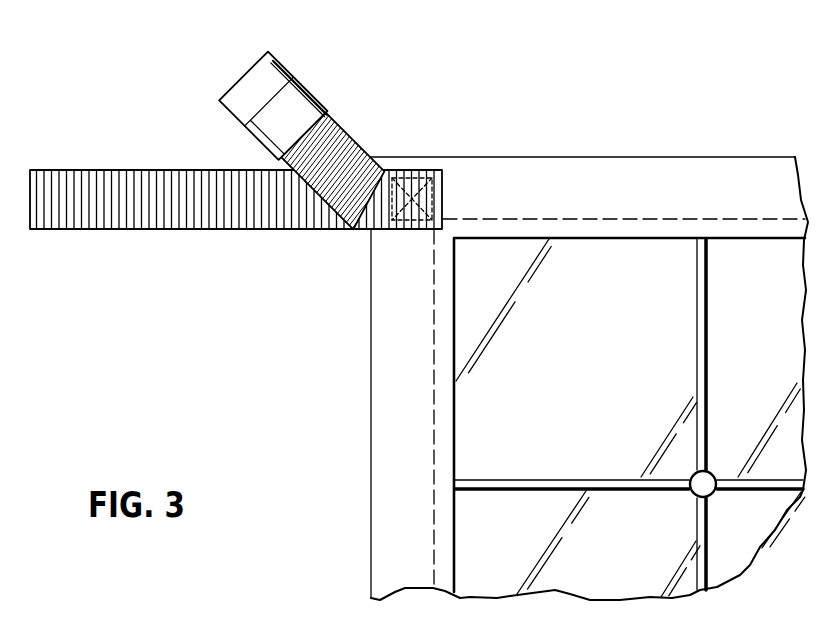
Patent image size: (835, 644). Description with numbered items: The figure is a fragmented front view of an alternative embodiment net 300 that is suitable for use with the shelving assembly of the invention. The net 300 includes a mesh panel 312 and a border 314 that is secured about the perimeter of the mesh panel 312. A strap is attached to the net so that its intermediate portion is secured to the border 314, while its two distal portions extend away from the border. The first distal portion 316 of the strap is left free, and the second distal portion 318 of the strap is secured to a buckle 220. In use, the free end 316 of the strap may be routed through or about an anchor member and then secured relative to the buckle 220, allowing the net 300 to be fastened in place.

The net 300 is at (268, 338).
The mesh panel 312 is at (700, 349).
The border 314 is at (630, 165).
The first distal portion 316 is at (191, 212).
The second distal portion 318 is at (343, 141).
The buckle 220 is at (268, 66).